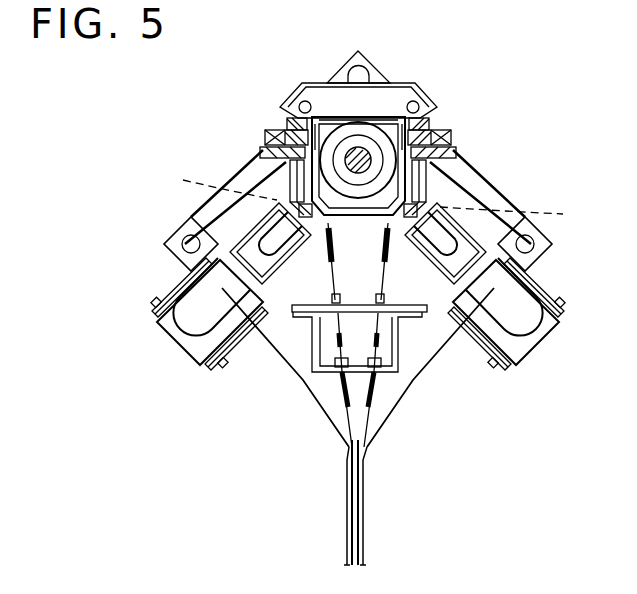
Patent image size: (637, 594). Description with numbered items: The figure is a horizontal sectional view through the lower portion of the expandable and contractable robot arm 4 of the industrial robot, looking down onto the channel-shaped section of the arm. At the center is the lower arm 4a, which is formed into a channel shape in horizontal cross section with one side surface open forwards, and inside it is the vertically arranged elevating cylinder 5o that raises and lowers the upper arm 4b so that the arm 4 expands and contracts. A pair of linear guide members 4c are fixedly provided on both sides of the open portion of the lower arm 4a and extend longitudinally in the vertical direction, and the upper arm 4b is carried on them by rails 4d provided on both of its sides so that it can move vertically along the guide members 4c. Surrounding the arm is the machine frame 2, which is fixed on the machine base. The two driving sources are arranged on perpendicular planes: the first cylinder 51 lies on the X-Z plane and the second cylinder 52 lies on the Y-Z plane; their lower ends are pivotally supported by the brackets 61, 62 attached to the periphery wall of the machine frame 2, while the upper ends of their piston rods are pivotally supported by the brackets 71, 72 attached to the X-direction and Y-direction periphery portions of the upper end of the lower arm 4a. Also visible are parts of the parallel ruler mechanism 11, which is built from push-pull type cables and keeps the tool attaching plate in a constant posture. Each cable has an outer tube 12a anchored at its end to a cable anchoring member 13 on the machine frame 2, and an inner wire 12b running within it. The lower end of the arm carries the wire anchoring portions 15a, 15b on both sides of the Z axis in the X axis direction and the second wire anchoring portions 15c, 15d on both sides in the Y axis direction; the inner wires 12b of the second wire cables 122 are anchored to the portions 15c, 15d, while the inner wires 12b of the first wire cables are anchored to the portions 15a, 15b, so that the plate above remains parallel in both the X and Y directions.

The machine frame 2 is at (198, 226).
The robot arm 4 is at (288, 150).
The lower arm 4a is at (470, 167).
The upper arm 4b is at (387, 108).
The linear guide members 4c is at (265, 136).
The rails 4d is at (293, 120).
The elevating cylinder 5o is at (352, 147).
The first cylinder 51 is at (473, 297).
The second cylinder 52 is at (247, 292).
The bracket 61 is at (533, 283).
The bracket 62 is at (183, 275).
The bracket 71 is at (432, 212).
The bracket 72 is at (305, 242).
The parallel ruler mechanism 11 is at (373, 452).
The outer tube 12a is at (345, 428).
The inner wire 12b is at (386, 224).
The second wire cables 122 is at (347, 513).
The cable anchoring member 13 is at (387, 377).
The wire anchoring portion 15a is at (395, 201).
The wire anchoring portion 15b is at (333, 117).
The second wire anchoring portion 15c is at (286, 176).
The second wire anchoring portion 15d is at (427, 113).